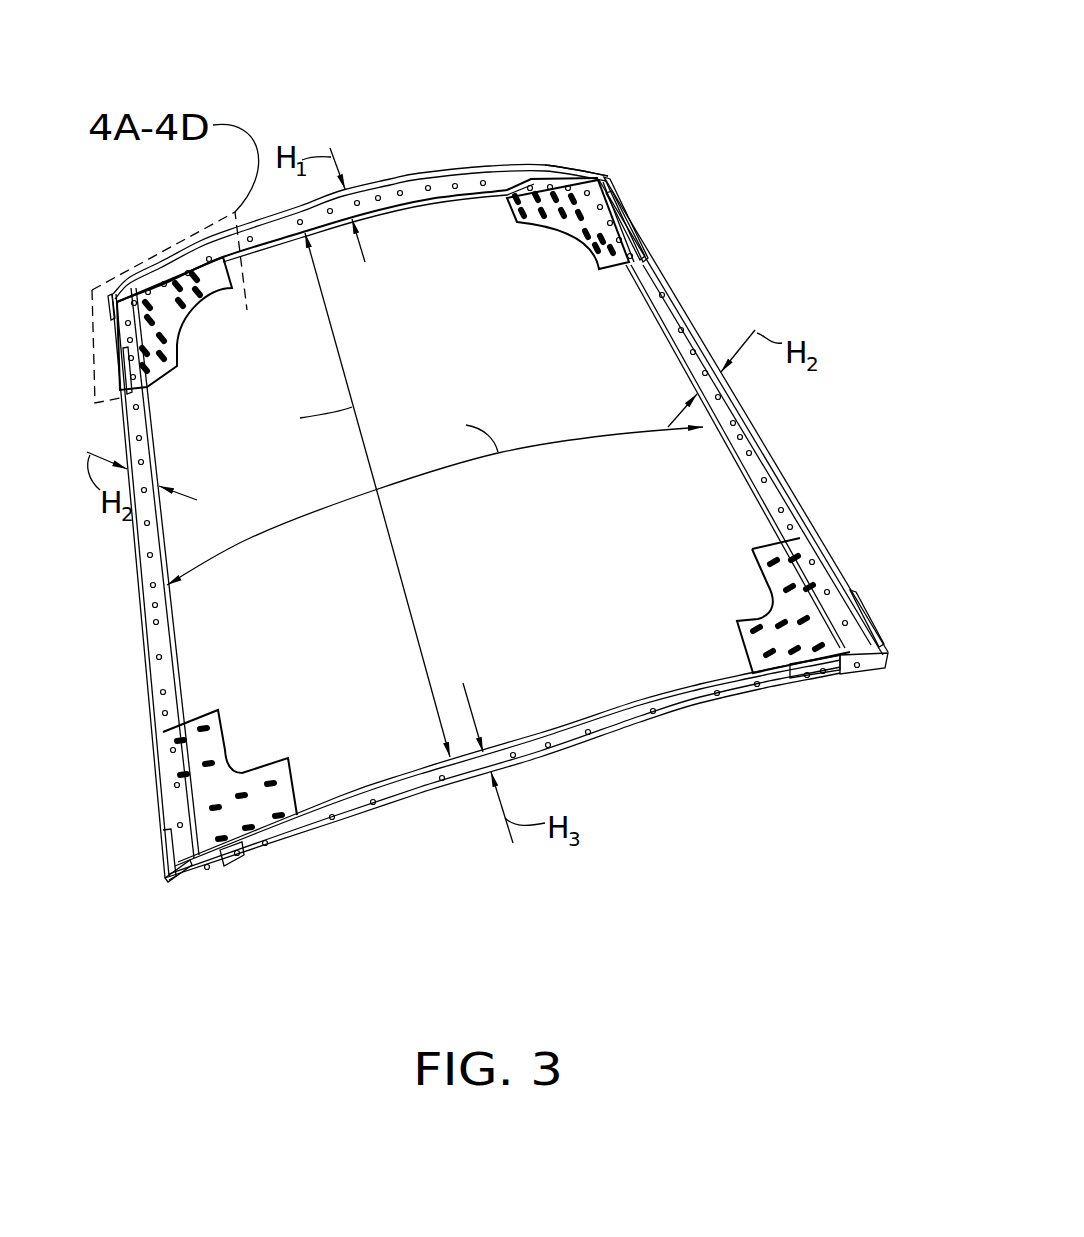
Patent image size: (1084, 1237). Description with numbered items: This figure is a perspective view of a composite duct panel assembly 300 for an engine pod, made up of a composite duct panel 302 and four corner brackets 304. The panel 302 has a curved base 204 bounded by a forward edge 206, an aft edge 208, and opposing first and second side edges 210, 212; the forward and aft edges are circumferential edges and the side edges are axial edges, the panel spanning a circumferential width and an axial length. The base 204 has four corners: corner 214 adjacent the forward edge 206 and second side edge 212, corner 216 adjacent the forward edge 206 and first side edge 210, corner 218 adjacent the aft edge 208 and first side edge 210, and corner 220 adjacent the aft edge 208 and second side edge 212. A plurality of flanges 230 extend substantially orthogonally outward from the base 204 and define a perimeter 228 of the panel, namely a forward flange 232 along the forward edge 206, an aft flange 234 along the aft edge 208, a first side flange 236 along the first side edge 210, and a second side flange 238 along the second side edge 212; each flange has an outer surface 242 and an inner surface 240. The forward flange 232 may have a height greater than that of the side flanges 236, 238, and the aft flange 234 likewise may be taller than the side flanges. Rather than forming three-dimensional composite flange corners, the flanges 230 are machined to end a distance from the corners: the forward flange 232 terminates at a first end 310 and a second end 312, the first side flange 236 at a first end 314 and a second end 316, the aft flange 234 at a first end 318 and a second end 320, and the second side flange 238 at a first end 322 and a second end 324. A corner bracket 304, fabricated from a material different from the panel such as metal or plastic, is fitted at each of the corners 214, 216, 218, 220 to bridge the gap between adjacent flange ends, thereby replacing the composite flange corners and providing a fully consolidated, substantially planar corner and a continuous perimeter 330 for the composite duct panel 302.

The composite duct panel assembly 300 is at (630, 84).
The composite duct panel 302 is at (708, 280).
The corner bracket 304 is at (606, 178).
The first end of forward flange 310 is at (160, 258).
The second end of forward flange 312 is at (563, 171).
The first end of first side flange 314 is at (628, 223).
The second end of first side flange 316 is at (856, 592).
The first end of aft flange 318 is at (843, 662).
The second end of aft flange 320 is at (228, 861).
The first end of second side flange 322 is at (160, 807).
The second end of second side flange 324 is at (100, 385).
The continuous perimeter 330 is at (381, 168).
The base 204 is at (412, 373).
The forward edge 206 is at (373, 204).
The aft edge 208 is at (403, 800).
The first side edge 210 is at (668, 320).
The second side edge 212 is at (150, 542).
The corner 214 is at (203, 333).
The corner 216 is at (554, 238).
The corner 218 is at (727, 581).
The corner 220 is at (260, 727).
The perimeter 228 is at (142, 668).
The flanges 230 is at (792, 462).
The forward flange 232 is at (430, 171).
The aft flange 234 is at (690, 700).
The first side flange 236 is at (740, 408).
The second side flange 238 is at (160, 640).
The inner surface 240 is at (573, 660).
The outer surface 242 is at (377, 820).